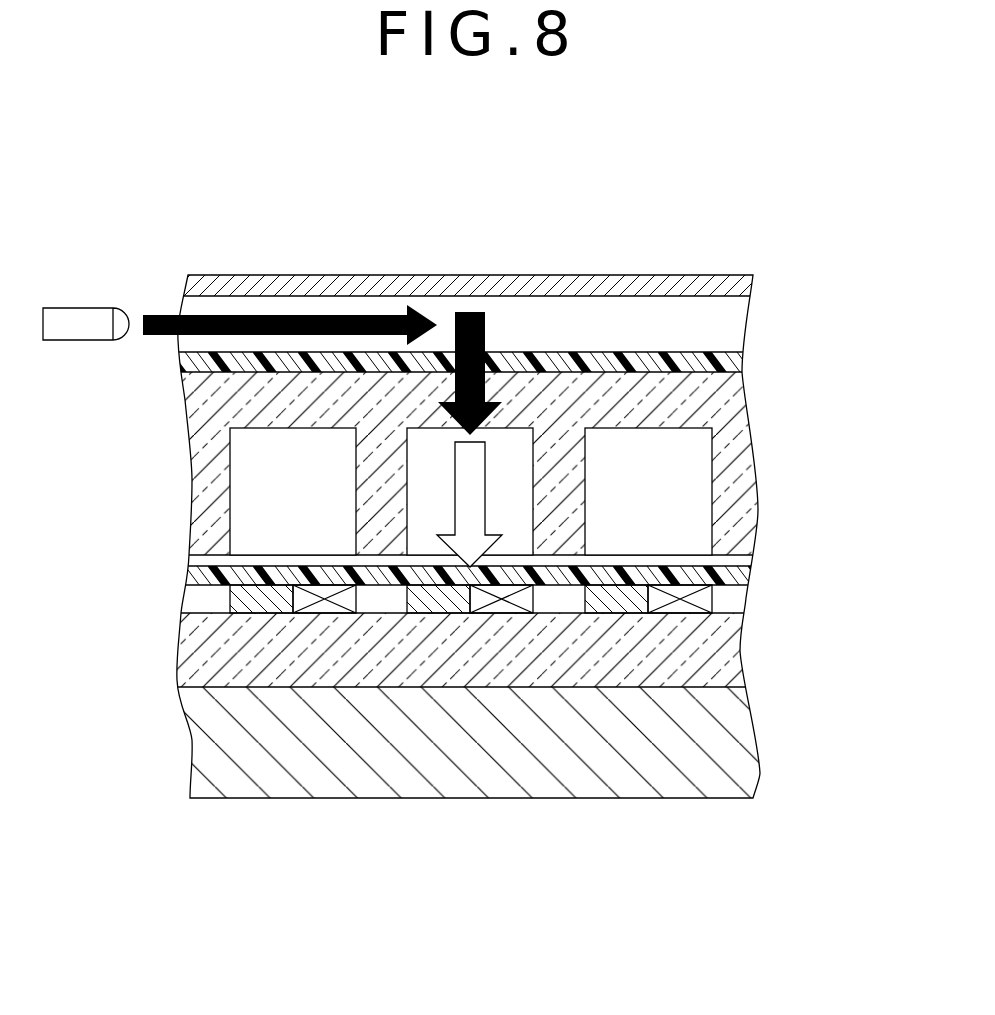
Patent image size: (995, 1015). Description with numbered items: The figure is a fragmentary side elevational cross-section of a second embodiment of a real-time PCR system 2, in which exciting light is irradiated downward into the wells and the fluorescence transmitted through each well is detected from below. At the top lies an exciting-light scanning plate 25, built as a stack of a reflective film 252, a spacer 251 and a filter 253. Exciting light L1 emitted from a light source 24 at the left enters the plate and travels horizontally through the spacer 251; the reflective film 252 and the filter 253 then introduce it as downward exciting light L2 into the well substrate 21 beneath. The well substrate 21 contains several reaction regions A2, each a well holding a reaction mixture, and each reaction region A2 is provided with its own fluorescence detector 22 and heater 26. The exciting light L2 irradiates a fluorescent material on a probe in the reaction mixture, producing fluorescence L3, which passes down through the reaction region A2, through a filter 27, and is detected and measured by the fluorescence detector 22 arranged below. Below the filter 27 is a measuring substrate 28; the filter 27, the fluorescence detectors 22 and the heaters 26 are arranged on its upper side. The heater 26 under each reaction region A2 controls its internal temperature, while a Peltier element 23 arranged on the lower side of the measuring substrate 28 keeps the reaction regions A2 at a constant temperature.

The real-time PCR system 2 is at (237, 197).
The well substrate 21 is at (737, 451).
The fluorescence detector 22 is at (258, 607).
The Peltier element 23 is at (742, 740).
The light source 24 is at (80, 317).
The exciting-light scanning plate 25 is at (531, 254).
The spacer 251 is at (695, 318).
The reflective film 252 is at (660, 273).
The filter 253 is at (528, 302).
The heater 26 is at (318, 607).
The filter 27 is at (753, 577).
The measuring substrate 28 is at (730, 651).
The reaction region A2 is at (245, 500).
The exciting light L1 is at (290, 313).
The exciting light L2 is at (467, 313).
The fluorescence L3 is at (485, 487).